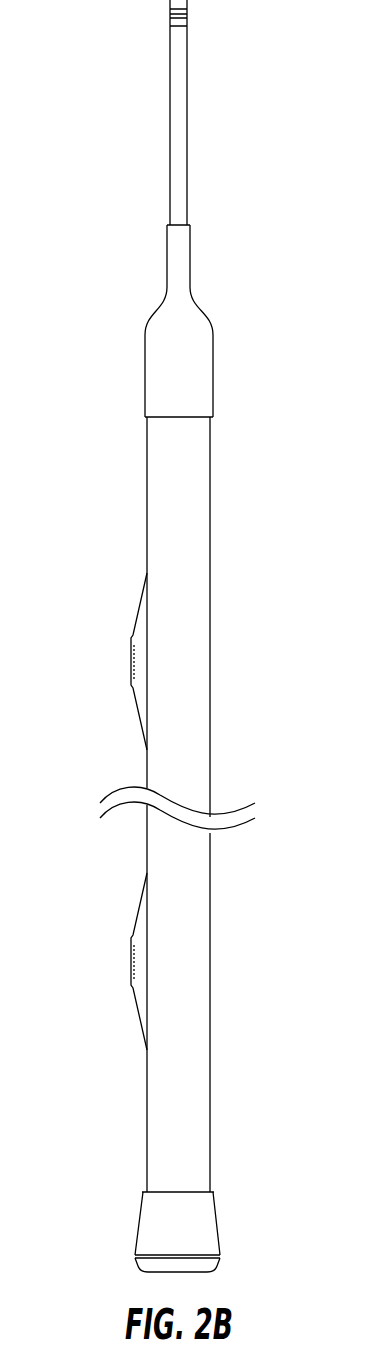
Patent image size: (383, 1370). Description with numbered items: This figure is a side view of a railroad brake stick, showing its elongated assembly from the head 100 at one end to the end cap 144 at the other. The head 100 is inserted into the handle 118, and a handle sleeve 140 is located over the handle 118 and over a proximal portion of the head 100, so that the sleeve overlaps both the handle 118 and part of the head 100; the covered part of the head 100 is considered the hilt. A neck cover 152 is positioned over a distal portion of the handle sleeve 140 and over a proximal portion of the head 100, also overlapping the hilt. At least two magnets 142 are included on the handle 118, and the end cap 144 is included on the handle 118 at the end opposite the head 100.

The head 100 is at (179, 197).
The neck cover 152 is at (193, 277).
The handle 118 is at (189, 557).
The handle sleeve 140 is at (186, 473).
The magnets 142 is at (134, 662).
The end cap 144 is at (214, 1252).